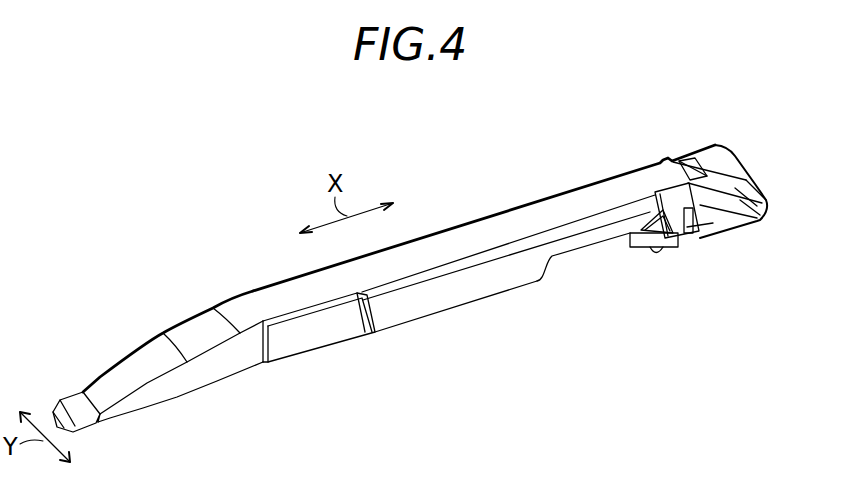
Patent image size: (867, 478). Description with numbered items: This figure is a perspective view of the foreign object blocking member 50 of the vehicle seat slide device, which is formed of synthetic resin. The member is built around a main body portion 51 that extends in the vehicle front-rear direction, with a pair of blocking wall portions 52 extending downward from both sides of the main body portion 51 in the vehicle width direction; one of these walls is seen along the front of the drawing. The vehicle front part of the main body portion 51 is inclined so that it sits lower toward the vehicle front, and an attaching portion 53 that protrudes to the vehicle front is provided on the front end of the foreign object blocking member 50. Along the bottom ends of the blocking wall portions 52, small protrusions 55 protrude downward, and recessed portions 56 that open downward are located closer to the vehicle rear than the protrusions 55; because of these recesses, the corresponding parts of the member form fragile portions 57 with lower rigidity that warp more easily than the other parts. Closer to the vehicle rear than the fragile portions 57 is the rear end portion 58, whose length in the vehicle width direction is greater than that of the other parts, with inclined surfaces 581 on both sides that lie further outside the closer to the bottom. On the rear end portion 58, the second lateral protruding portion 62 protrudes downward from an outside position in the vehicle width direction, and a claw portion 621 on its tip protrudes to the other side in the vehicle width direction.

The foreign object blocking member 50 is at (185, 175).
The main body portion 51 is at (473, 232).
The blocking wall portion 52 is at (427, 313).
The attaching portion 53 is at (73, 403).
The protrusion 55 is at (540, 285).
The recessed portion 56 is at (553, 278).
The fragile portion 57 is at (576, 202).
The rear end portion 58 is at (727, 162).
The inclined surface 581 is at (750, 195).
The second lateral protruding portion 62 is at (703, 228).
The claw portion 621 is at (688, 248).